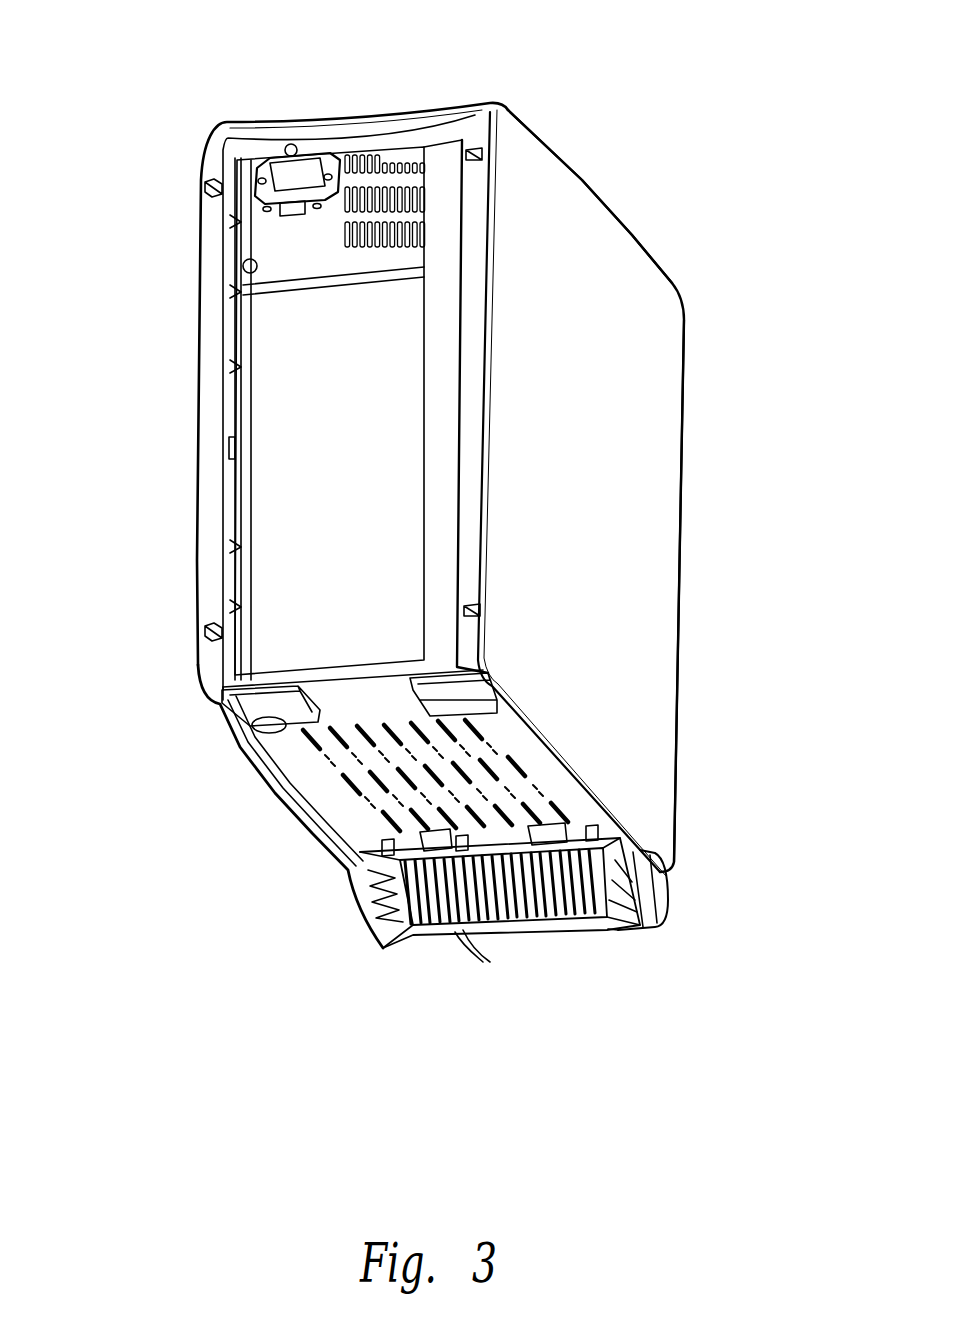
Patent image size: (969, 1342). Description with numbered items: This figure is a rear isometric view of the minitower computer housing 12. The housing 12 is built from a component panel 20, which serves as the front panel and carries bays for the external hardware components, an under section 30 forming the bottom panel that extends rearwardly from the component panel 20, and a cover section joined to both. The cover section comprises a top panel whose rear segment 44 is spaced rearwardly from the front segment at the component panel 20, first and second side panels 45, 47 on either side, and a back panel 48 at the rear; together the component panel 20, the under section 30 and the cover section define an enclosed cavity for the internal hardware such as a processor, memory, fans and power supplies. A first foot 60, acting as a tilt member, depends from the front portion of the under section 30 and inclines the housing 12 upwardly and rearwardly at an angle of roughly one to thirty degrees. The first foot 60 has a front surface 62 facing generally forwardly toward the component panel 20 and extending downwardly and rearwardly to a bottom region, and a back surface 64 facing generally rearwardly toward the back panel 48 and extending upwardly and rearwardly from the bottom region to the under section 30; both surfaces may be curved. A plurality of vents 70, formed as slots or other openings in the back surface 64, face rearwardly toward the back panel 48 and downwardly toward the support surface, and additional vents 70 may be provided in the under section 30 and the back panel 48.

The housing 12 is at (559, 84).
The component panel 20 is at (682, 581).
The under section 30 is at (297, 755).
The rear segment 44 is at (594, 190).
The first side panel 45 is at (655, 412).
The second side panel 47 is at (200, 322).
The back panel 48 is at (264, 473).
The first foot 60 is at (660, 892).
The front surface 62 is at (665, 917).
The back surface 64 is at (580, 928).
The vents 70 is at (297, 823).